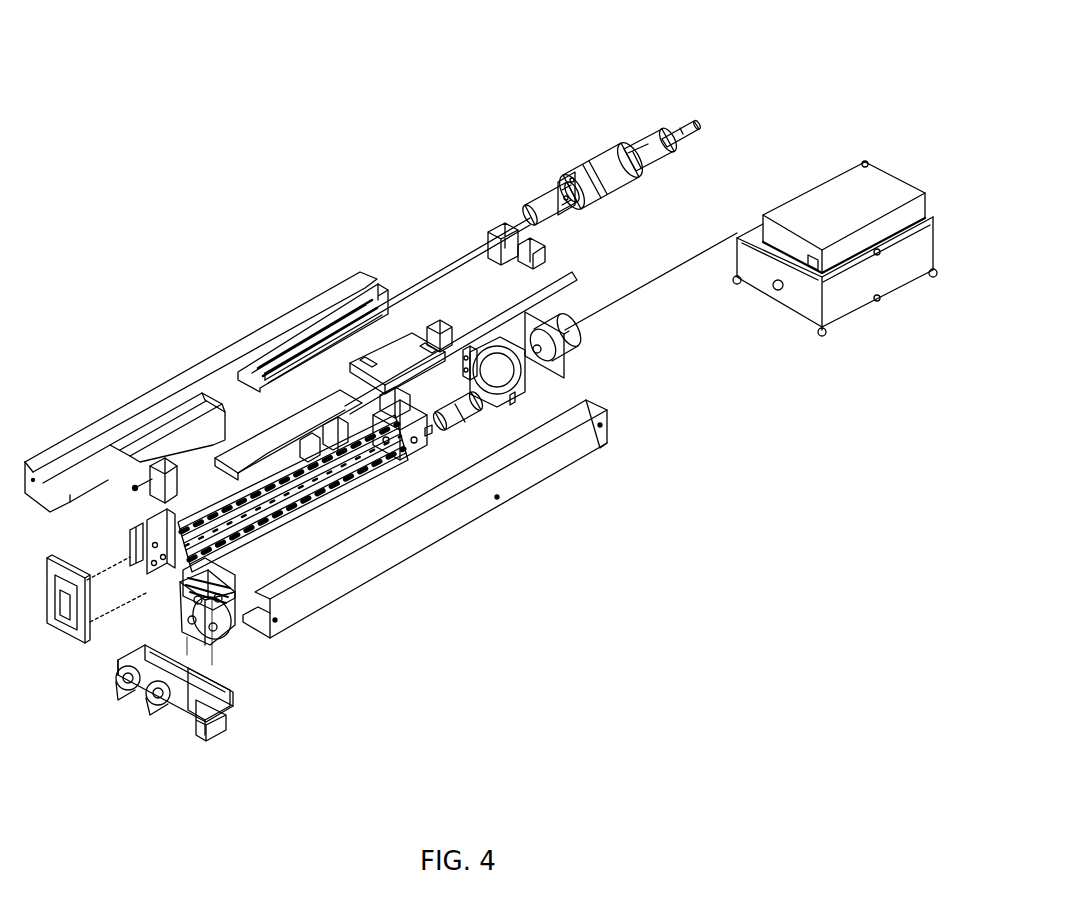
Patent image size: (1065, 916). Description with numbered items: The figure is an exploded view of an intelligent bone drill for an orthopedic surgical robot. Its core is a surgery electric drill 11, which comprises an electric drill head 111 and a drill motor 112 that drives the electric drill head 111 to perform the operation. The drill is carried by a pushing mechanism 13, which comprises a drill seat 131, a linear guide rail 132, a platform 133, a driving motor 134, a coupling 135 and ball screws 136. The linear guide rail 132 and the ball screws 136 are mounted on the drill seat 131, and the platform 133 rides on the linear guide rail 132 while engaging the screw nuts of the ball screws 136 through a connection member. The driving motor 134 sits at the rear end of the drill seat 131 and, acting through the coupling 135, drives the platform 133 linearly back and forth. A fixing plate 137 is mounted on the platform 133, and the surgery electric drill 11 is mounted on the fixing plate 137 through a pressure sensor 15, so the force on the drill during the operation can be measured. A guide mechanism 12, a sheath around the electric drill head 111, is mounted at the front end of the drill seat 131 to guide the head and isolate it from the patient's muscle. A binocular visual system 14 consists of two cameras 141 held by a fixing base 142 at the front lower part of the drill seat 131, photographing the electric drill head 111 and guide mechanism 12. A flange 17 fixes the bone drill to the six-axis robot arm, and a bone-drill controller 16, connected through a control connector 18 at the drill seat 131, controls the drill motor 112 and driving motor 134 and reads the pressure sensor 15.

The surgery electric drill 11 is at (611, 142).
The drill motor 112 is at (668, 147).
The electric drill head 111 is at (420, 286).
The pressure sensor 15 is at (497, 232).
The platform 133 is at (400, 358).
The fixing plate 137 is at (428, 330).
The linear guide rail 132 is at (561, 273).
The bone-drill controller 16 is at (865, 160).
The guide mechanism 12 is at (137, 487).
The control connector 18 is at (582, 338).
The driving motor 134 is at (543, 395).
The pushing mechanism 13 is at (520, 452).
The coupling 135 is at (484, 431).
The ball screws 136 is at (315, 537).
The drill seat 131 is at (158, 580).
The cameras 141 is at (130, 691).
The fixing base 142 is at (223, 685).
The flange 17 is at (227, 633).
The binocular visual system 14 is at (229, 717).